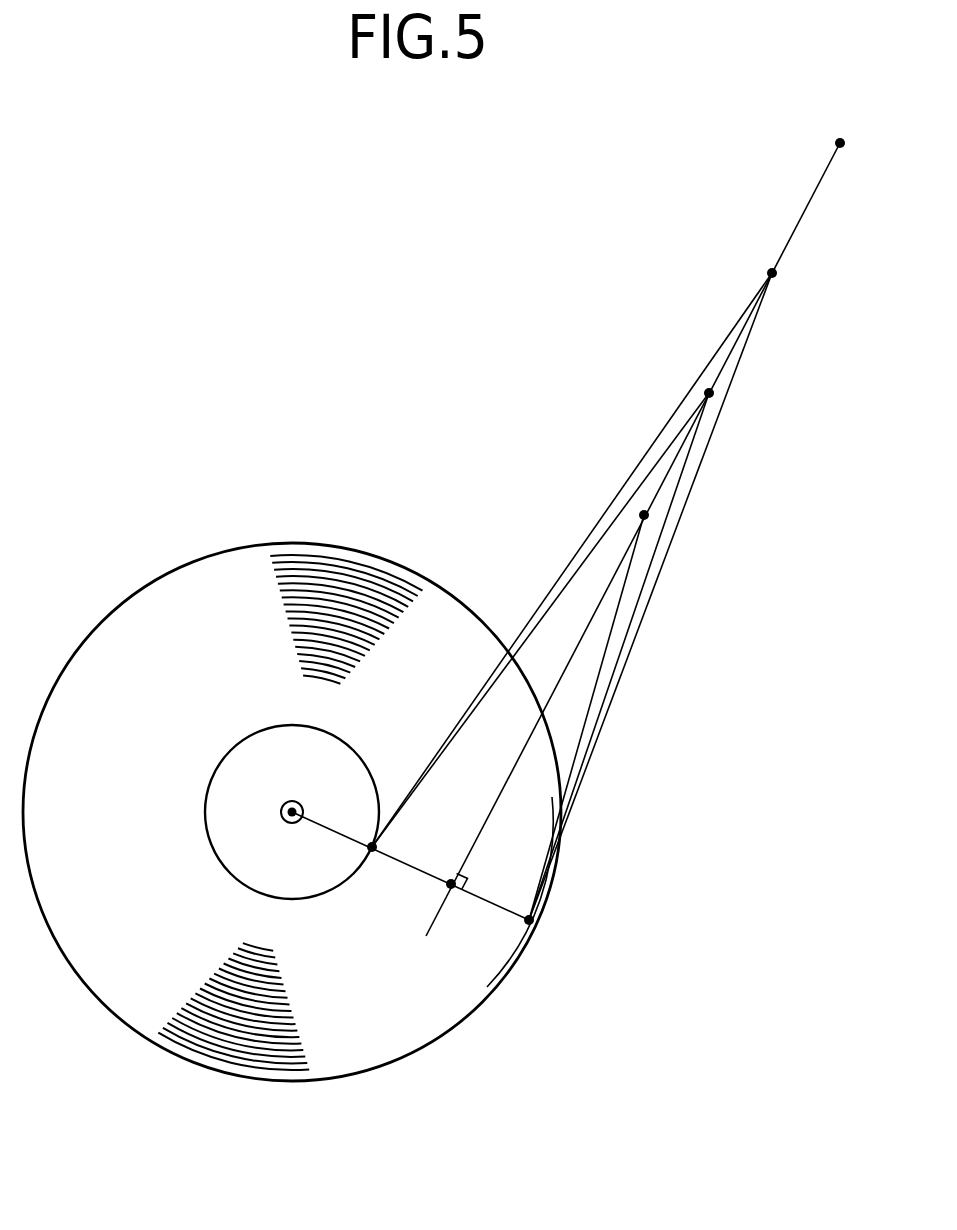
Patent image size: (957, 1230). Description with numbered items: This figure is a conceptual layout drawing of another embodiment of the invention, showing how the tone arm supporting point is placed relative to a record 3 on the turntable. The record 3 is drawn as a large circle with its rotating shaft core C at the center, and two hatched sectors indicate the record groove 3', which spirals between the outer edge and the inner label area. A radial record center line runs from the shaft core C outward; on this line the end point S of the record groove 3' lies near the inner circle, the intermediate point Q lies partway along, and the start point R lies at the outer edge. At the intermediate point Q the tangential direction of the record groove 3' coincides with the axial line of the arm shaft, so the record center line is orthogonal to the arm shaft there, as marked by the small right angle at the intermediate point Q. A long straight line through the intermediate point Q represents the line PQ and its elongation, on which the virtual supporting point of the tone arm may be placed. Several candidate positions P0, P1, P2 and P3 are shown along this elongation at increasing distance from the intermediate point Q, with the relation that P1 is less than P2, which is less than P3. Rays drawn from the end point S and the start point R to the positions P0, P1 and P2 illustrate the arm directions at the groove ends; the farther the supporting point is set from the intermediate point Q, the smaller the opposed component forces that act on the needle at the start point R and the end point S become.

The record 3 is at (292, 801).
The record groove 3' is at (290, 816).
The rotating shaft core of the turntable C is at (286, 803).
The end point of the record groove S is at (354, 855).
The intermediate point of the record groove Q is at (436, 915).
The start point of the record groove R is at (524, 892).
The pickup position P0 is at (648, 519).
The supporting point position P1 is at (712, 397).
The supporting point position P2 is at (776, 277).
The supporting point position P3 is at (836, 143).